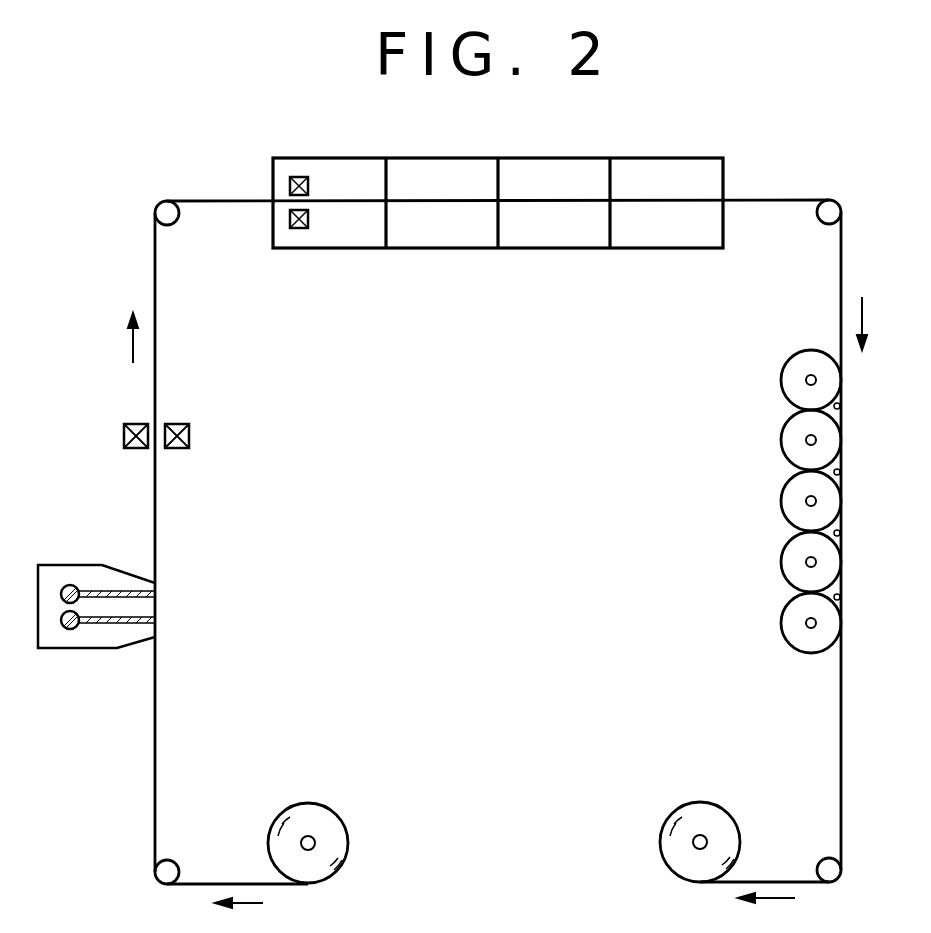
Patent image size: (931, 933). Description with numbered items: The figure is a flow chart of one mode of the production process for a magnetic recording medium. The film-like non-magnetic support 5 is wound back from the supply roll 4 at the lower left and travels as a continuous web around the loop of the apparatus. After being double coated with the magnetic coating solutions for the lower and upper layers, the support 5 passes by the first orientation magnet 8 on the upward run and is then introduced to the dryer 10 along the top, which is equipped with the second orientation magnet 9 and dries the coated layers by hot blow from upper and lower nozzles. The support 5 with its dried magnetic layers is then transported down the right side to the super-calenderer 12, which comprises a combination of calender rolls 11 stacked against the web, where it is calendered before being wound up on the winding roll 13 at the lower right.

The supply roll 4 is at (315, 836).
The non-magnetic support 5 is at (157, 737).
The first orientation magnet 8 is at (190, 432).
The second orientation magnet 9 is at (297, 232).
The dryer 10 is at (457, 249).
The calender rolls 11 is at (790, 382).
The super-calenderer 12 is at (768, 440).
The winding roll 13 is at (695, 835).